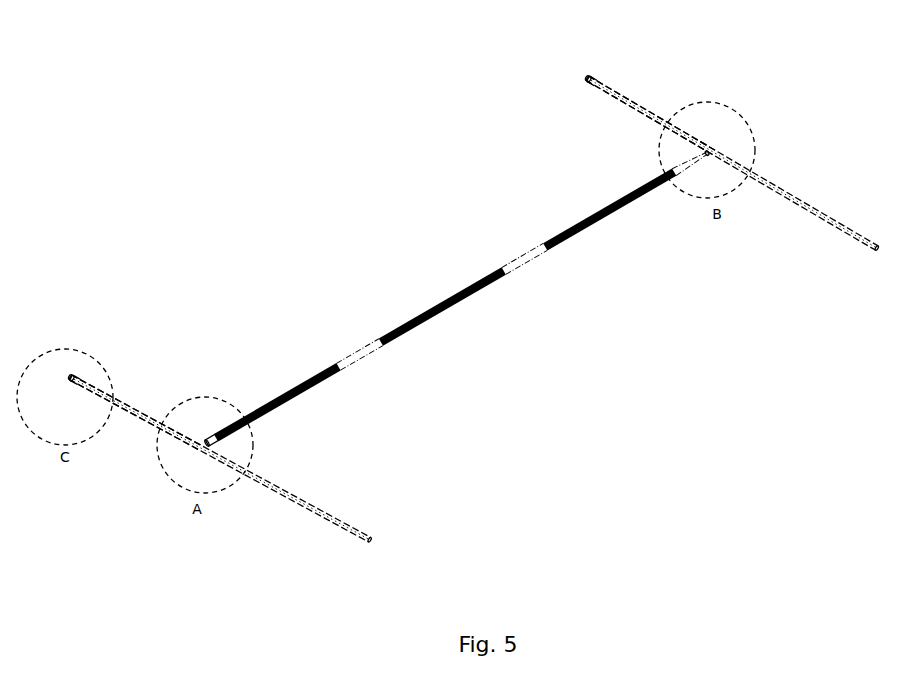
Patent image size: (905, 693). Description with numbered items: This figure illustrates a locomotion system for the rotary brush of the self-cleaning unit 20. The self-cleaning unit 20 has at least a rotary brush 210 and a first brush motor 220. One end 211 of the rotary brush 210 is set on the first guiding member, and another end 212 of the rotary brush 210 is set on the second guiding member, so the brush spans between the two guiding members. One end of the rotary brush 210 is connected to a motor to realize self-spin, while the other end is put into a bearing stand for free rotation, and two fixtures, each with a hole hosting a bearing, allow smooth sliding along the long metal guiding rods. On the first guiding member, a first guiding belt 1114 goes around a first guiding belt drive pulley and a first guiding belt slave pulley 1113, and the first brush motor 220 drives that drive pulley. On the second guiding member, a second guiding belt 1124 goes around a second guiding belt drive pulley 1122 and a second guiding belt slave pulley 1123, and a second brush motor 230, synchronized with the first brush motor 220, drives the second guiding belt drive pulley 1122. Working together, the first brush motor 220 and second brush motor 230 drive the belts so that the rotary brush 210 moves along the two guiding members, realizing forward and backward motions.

The self-cleaning unit 20 is at (457, 298).
The rotary brush 210 is at (443, 297).
The one end of the rotary brush 211 is at (205, 437).
The another end of the rotary brush 212 is at (707, 153).
The first brush motor 220 is at (75, 377).
The second brush motor 230 is at (593, 77).
The first guiding belt slave pulley 1113 is at (368, 543).
The first guiding belt 1114 is at (95, 385).
The second guiding belt drive pulley 1122 is at (587, 82).
The second guiding belt slave pulley 1123 is at (875, 253).
The second guiding belt 1124 is at (712, 155).